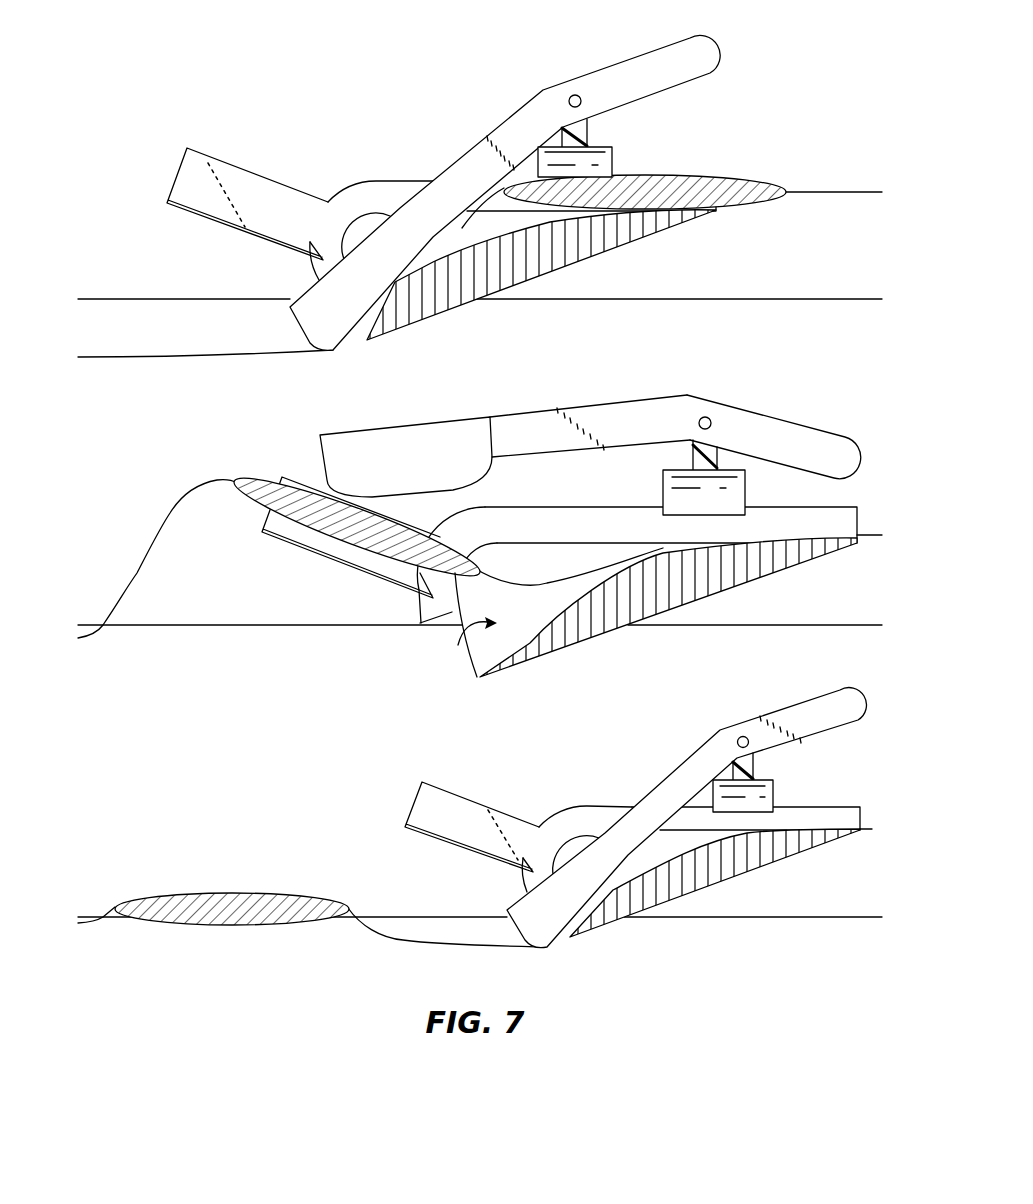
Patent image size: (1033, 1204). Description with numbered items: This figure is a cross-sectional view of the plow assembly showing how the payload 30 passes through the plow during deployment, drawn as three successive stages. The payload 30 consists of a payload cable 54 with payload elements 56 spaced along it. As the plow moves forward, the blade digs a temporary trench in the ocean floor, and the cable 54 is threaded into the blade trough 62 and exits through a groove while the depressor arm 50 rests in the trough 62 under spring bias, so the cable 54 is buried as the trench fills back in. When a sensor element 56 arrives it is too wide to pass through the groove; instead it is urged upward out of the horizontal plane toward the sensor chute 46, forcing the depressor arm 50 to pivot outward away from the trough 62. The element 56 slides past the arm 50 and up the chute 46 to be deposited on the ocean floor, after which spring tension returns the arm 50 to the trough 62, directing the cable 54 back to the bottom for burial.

The cable-and-sensor payload 30 is at (818, 193).
The sensor chute 46 is at (245, 192).
The depressor arm 50 is at (623, 78).
The payload cable 54 is at (143, 355).
The sensor element 56 is at (725, 175).
The blade trough 62 is at (458, 645).